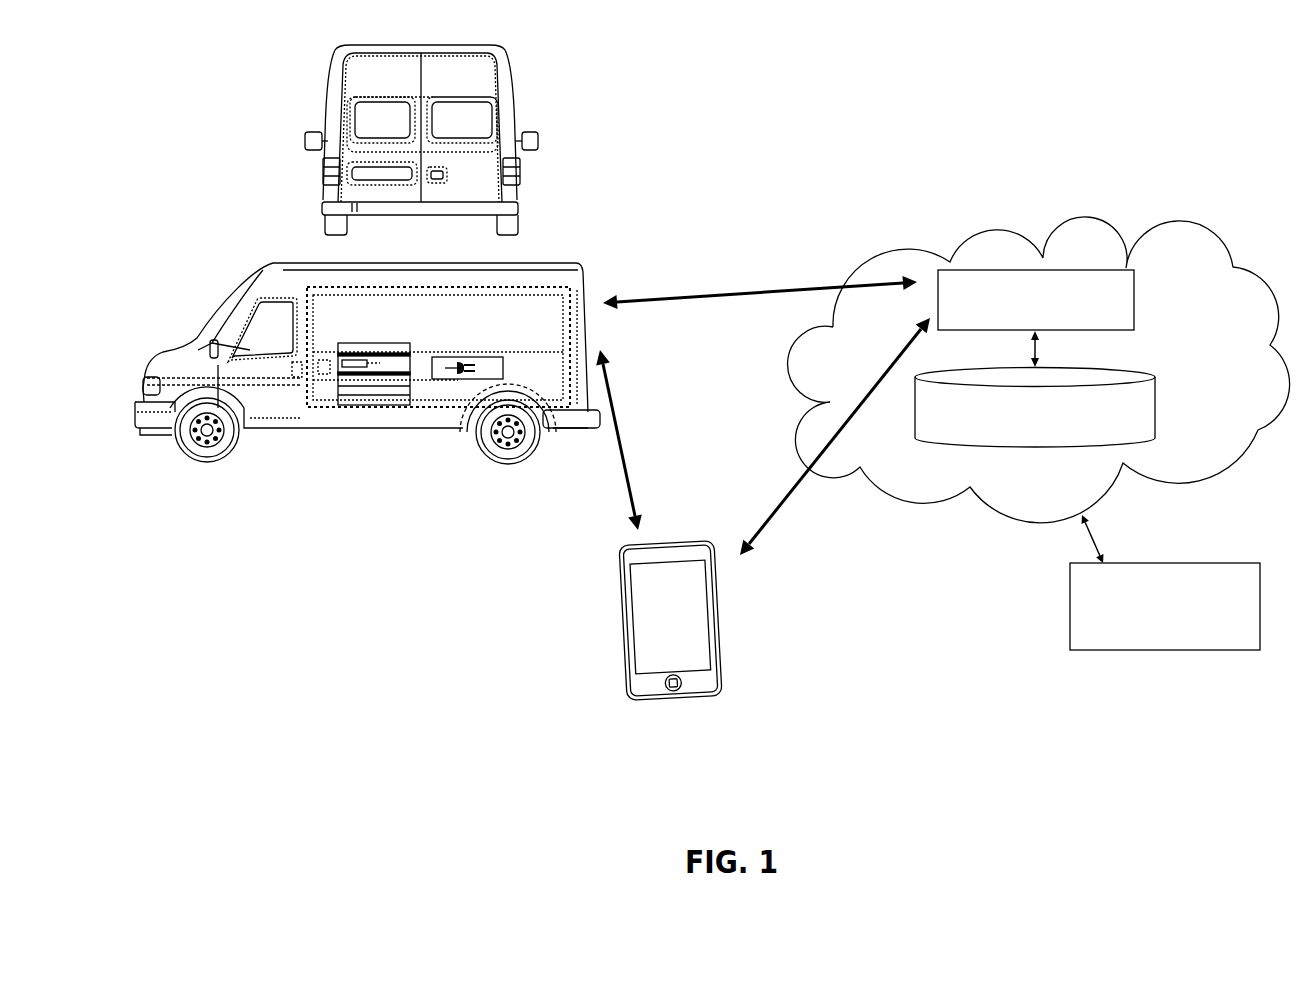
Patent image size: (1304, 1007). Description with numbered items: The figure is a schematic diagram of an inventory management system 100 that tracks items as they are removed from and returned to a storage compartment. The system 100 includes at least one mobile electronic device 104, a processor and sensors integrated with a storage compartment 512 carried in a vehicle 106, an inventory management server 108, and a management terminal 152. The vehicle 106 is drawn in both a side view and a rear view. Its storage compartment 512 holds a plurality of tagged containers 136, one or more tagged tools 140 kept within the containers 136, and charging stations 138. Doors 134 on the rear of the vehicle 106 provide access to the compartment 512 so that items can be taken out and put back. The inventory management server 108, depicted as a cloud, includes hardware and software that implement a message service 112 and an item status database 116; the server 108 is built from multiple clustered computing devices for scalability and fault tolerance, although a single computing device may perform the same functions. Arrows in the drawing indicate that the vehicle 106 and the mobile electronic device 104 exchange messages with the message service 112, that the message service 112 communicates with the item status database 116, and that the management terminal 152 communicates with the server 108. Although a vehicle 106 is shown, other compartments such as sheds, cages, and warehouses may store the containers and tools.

The inventory management system 100 is at (457, 688).
The mobile electronic device 104 is at (665, 538).
The vehicle 106 is at (323, 153).
The inventory management server 108 is at (845, 268).
The message service 112 is at (1134, 302).
The item status database 116 is at (1158, 374).
The doors 134 is at (427, 196).
The tagged containers 136 is at (397, 332).
The charging stations 138 is at (460, 357).
The tagged tools 140 is at (352, 360).
The management terminal 152 is at (1090, 650).
The storage compartment 512 is at (533, 285).